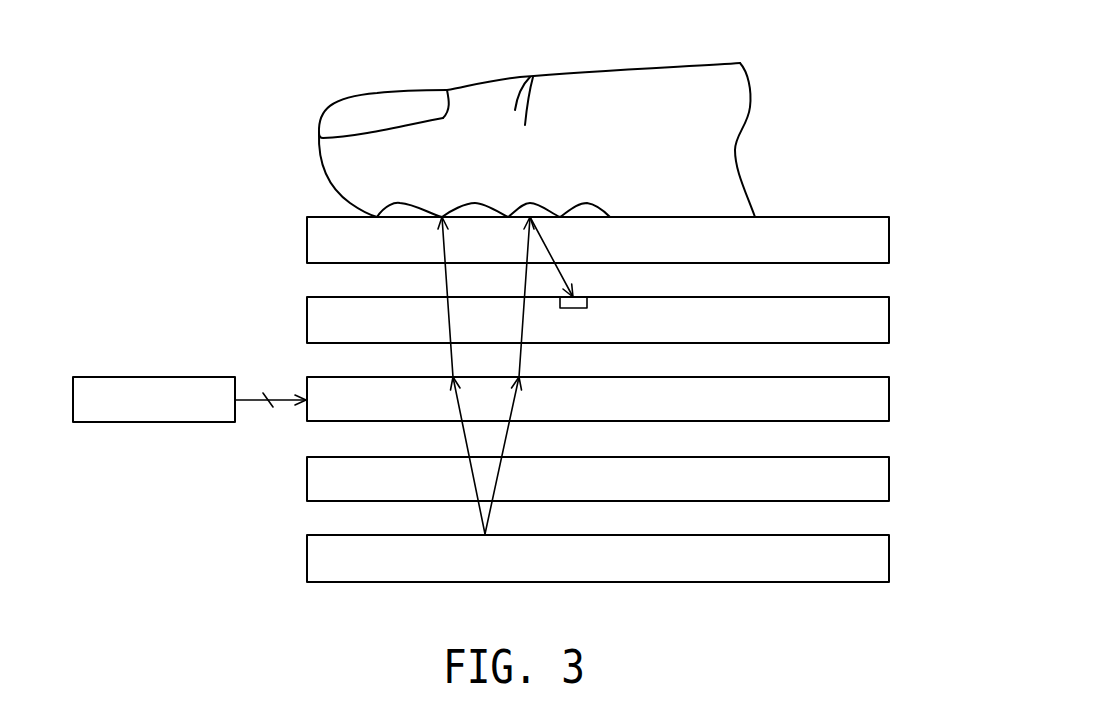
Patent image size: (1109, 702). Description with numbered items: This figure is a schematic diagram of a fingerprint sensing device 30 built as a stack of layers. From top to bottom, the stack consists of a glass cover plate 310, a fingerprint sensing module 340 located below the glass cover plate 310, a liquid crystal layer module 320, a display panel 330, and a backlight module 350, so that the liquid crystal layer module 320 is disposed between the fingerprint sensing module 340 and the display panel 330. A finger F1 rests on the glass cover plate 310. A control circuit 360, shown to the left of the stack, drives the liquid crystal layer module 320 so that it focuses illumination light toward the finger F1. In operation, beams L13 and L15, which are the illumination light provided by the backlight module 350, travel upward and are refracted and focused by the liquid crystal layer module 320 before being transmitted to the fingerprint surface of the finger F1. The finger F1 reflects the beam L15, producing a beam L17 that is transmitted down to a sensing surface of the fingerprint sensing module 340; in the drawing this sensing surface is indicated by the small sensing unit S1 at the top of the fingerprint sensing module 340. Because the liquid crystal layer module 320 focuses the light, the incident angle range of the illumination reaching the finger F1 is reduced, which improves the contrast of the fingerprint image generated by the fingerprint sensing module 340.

The display apparatus with fingerprint sensing 30 is at (902, 635).
The glass cover plate 310 is at (889, 240).
The liquid crystal layer module 320 is at (889, 399).
The display panel 330 is at (889, 479).
The fingerprint sensing module 340 is at (889, 320).
The backlight module 350 is at (889, 557).
The control circuit 360 is at (168, 377).
The finger F1 is at (712, 60).
The sensing unit S1 is at (573, 308).
The beam L13 is at (270, 421).
The beam L15 is at (300, 437).
The beam L17 is at (568, 272).